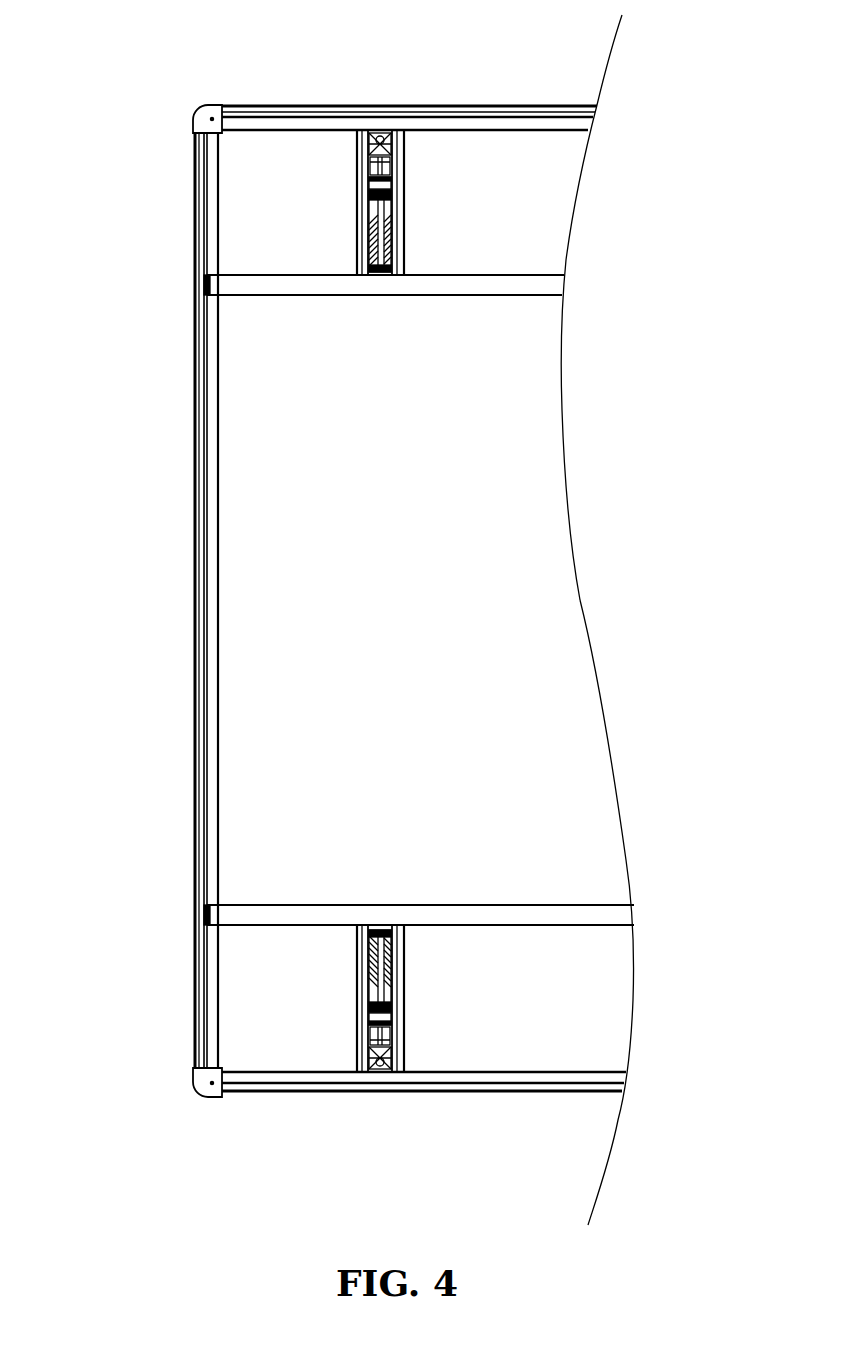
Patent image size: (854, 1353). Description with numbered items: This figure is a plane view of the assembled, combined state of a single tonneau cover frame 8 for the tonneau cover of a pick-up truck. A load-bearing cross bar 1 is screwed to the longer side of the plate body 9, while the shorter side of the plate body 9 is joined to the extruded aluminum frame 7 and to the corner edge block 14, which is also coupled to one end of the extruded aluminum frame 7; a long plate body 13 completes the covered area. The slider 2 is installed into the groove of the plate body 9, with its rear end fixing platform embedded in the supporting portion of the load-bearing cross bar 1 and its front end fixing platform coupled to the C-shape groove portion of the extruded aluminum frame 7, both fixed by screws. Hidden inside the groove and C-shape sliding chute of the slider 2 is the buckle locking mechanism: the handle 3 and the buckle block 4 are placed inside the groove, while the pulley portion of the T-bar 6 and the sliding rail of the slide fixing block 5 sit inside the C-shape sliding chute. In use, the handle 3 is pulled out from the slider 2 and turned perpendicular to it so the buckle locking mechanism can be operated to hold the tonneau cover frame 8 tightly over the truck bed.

The load-bearing cross bar 1 is at (340, 292).
The slider 2 is at (407, 237).
The handle 3 is at (373, 243).
The buckle block 4 is at (368, 181).
The slide fixing block 5 is at (365, 150).
The T-bar 6 is at (398, 137).
The extruded aluminum frame 7 is at (460, 105).
The tonneau cover frame 8 is at (186, 257).
The plate body 9 is at (598, 1018).
The long plate body 13 is at (541, 455).
The corner edge block 14 is at (203, 112).